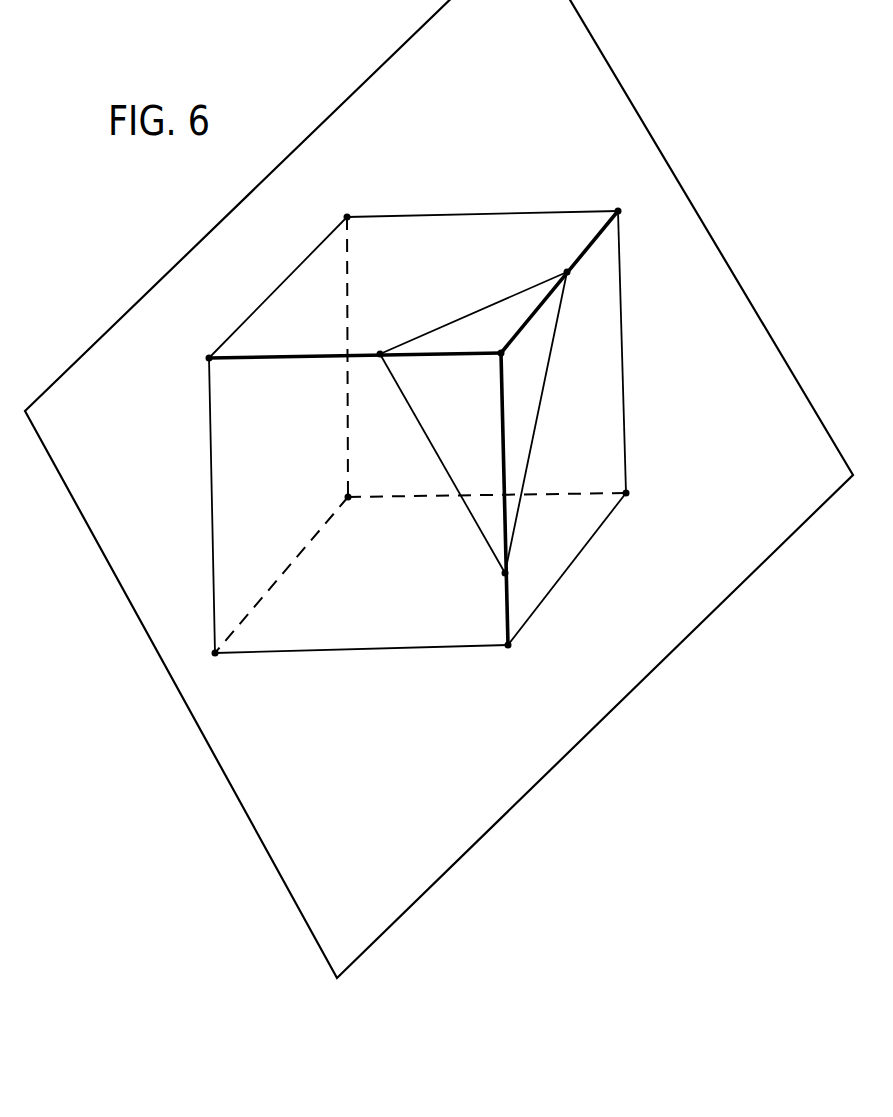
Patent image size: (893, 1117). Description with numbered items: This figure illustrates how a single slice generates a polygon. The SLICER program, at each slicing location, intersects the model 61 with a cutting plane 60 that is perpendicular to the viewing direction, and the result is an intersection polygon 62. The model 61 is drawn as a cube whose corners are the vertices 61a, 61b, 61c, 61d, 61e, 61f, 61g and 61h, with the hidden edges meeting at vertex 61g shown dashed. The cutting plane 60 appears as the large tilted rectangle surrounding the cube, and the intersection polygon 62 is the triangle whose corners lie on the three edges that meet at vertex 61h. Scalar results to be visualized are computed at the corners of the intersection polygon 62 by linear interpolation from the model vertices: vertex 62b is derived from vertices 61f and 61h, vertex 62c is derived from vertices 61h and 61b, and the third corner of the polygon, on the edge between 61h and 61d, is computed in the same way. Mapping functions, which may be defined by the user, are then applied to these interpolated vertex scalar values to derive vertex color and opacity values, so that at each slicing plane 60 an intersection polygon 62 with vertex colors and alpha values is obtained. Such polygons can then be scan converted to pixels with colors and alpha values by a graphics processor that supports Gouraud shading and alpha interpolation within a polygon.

The cutting plane 60 is at (713, 618).
The model 61 is at (367, 655).
The model vertex 61a is at (347, 217).
The model vertex 61b is at (618, 211).
The model vertex 61c is at (626, 493).
The model vertex 61d is at (508, 645).
The model vertex 61e is at (215, 653).
The model vertex 61f is at (209, 358).
The model vertex 61g is at (348, 497).
The model vertex 61h is at (501, 353).
The intersection polygon 62 is at (540, 410).
The intersection polygon vertex 62b is at (380, 354).
The intersection polygon vertex 62c is at (567, 272).